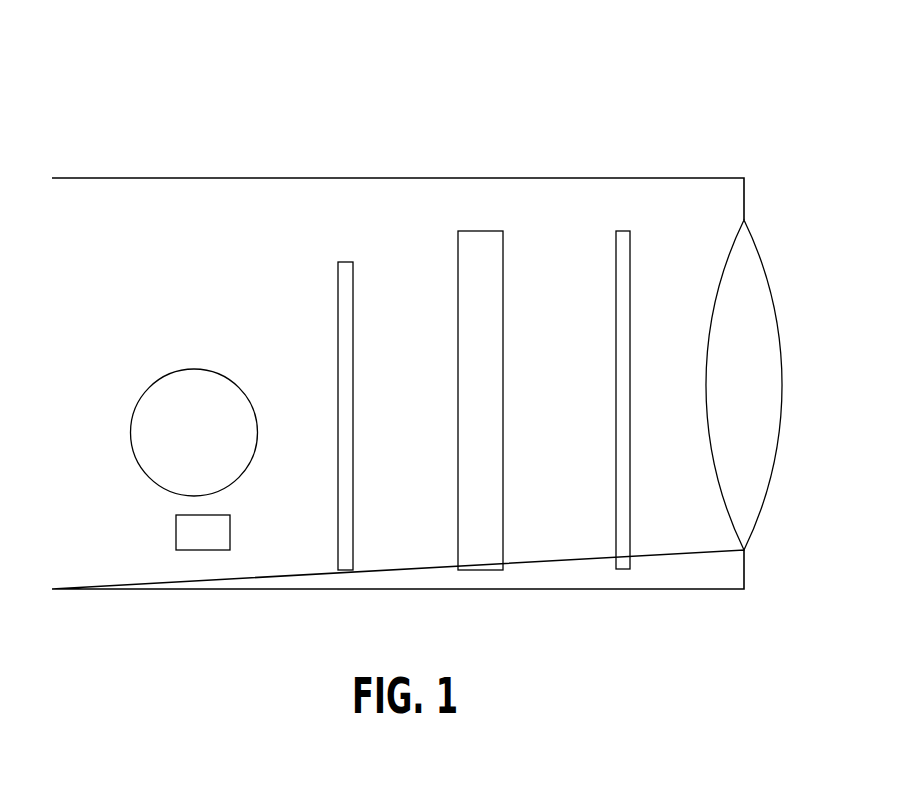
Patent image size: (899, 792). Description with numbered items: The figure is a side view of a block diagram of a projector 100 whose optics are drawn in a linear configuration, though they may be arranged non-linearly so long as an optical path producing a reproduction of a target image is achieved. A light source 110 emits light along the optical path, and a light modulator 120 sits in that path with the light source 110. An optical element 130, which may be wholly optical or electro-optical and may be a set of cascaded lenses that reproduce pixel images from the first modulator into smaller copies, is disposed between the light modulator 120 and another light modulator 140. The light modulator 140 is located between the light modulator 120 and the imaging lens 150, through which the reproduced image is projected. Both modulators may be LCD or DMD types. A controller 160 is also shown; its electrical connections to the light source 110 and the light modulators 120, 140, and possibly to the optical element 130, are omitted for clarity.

The projector 100 is at (58, 78).
The light source 110 is at (204, 368).
The light modulator 120 is at (353, 290).
The optical element 130 is at (503, 260).
The light modulator 140 is at (630, 260).
The imaging lens 150 is at (762, 262).
The controller 160 is at (176, 533).